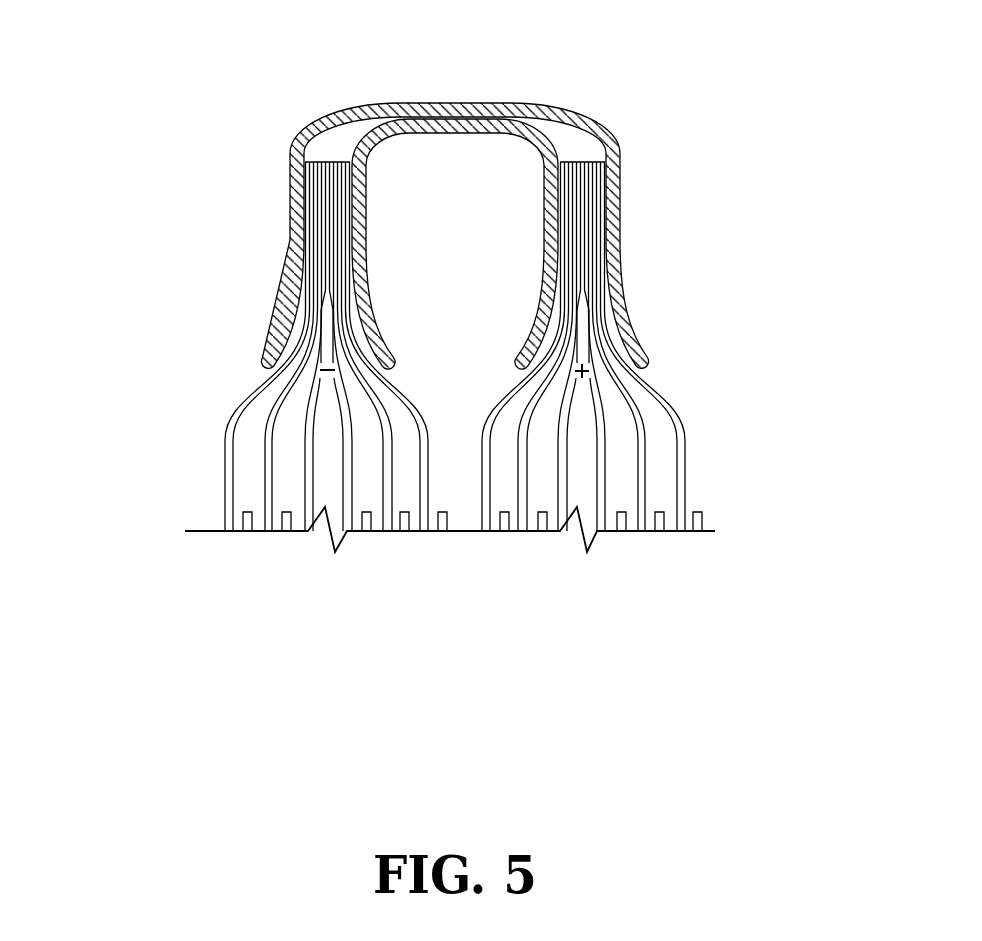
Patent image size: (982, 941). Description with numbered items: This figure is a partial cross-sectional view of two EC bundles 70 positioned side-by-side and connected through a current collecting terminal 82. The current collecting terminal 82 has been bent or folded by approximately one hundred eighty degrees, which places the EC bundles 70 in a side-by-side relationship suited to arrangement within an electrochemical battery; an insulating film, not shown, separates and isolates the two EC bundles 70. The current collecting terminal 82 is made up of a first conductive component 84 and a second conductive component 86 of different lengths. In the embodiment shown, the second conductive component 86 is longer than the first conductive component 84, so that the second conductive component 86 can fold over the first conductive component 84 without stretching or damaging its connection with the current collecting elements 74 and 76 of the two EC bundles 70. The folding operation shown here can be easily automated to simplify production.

The EC bundle 70 is at (177, 462).
The current collecting element 74 is at (330, 330).
The current collecting element 76 is at (587, 333).
The current collecting terminal 82 is at (502, 60).
The first conductive component 84 is at (511, 136).
The second conductive component 86 is at (598, 134).